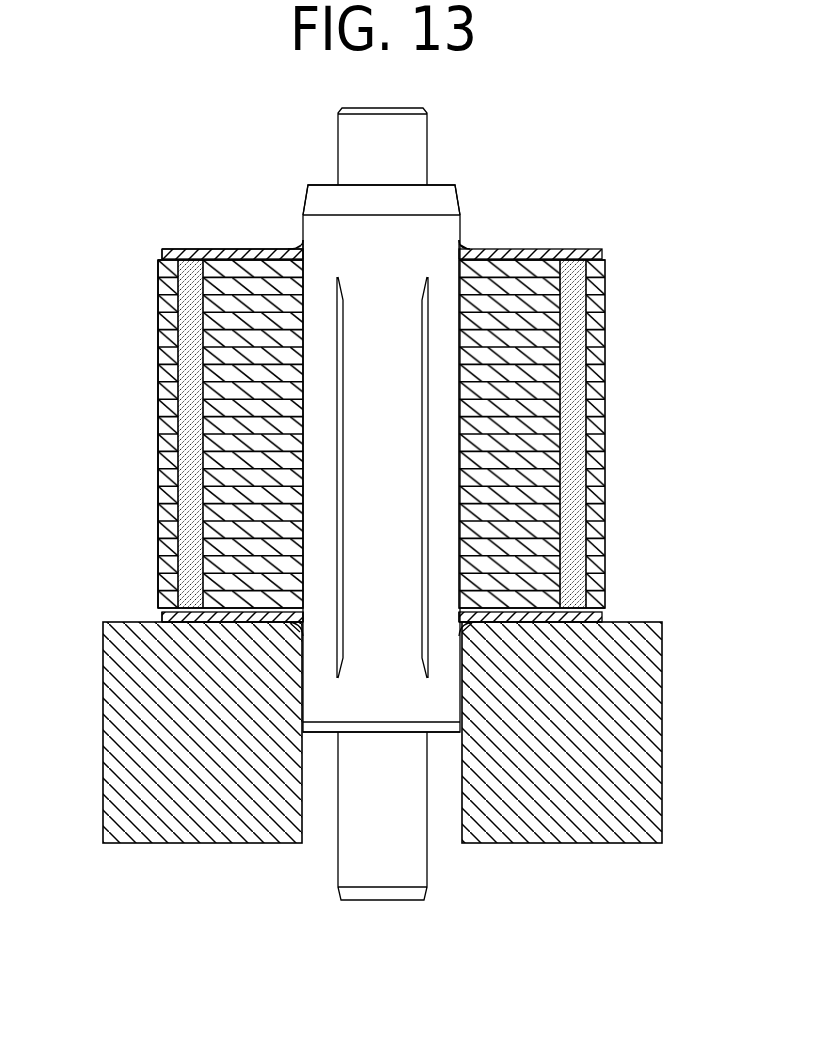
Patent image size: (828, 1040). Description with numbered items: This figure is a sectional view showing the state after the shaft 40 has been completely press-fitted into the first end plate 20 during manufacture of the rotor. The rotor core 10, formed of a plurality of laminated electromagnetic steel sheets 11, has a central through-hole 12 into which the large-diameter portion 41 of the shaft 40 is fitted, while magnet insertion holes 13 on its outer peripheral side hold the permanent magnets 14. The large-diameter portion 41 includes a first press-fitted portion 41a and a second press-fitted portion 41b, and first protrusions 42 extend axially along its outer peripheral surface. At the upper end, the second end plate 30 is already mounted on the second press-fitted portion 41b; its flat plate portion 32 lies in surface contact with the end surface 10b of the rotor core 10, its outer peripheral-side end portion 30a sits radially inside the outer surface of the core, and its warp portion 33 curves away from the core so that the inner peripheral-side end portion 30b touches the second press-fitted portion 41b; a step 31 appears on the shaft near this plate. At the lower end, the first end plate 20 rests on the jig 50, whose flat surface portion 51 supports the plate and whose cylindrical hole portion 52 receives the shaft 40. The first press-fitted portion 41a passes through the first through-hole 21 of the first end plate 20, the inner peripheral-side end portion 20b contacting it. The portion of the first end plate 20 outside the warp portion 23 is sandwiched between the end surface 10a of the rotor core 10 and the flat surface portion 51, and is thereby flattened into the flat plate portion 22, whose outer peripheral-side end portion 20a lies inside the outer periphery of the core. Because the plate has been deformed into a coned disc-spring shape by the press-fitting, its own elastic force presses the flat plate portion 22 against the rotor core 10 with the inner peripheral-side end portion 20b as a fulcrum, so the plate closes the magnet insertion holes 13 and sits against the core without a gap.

The rotor core 10 is at (402, 411).
The end surface 10a is at (540, 624).
The end surface 10b is at (244, 258).
The electromagnetic steel sheets 11 is at (168, 268).
The through-hole 12 is at (298, 393).
The magnet insertion holes 13 is at (582, 398).
The permanent magnets 14 is at (590, 432).
The first end plate 20 is at (600, 618).
The outer peripheral-side end portion 20a is at (160, 618).
The inner peripheral-side end portion 20b is at (292, 623).
The first through-hole 21 is at (460, 622).
The flat plate portion 22 is at (213, 617).
The warp portion 23 is at (300, 614).
The second end plate 30 is at (598, 256).
The outer peripheral-side end portion 30a is at (164, 250).
The inner peripheral-side end portion 30b is at (303, 243).
The shoulder portion of shaft 31 is at (455, 246).
The flat plate portion 32 is at (215, 250).
The warp portion 33 is at (292, 246).
The shaft 40 is at (407, 145).
The large-diameter portion 41 is at (509, 446).
The first press-fitted portion 41a is at (443, 688).
The second press-fitted portion 41b is at (420, 227).
The first protrusions 42 is at (427, 500).
The jig 50 is at (366, 689).
The flat surface portion 51 is at (130, 620).
The hole portion 52 is at (458, 765).